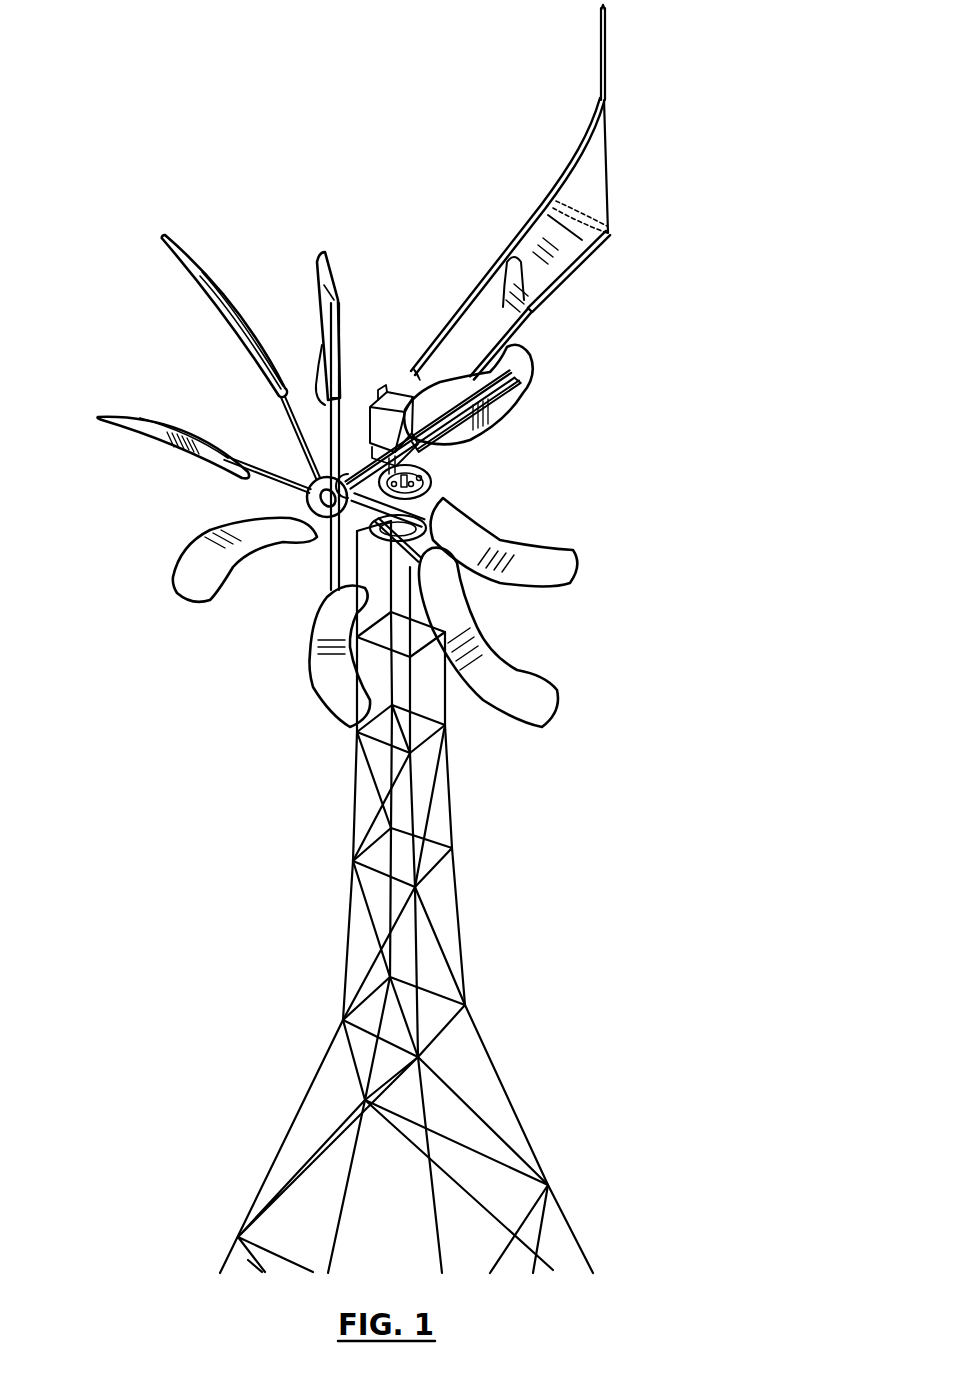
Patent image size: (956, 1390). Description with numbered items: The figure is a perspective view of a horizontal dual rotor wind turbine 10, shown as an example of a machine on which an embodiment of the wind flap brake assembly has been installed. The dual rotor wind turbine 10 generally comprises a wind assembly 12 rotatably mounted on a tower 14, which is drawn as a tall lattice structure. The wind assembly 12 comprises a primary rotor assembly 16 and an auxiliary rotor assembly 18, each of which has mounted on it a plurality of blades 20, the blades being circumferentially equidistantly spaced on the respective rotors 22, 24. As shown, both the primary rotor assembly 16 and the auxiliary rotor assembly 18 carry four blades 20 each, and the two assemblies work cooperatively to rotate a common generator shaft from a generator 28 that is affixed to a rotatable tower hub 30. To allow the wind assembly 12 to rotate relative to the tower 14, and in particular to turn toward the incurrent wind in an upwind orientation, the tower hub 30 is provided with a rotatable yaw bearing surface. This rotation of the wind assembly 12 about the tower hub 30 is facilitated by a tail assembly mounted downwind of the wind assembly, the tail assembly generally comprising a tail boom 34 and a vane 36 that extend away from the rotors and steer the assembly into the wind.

The dual rotor wind turbine 10 is at (112, 310).
The wind assembly 12 is at (545, 485).
The tower 14 is at (518, 998).
The primary rotor assembly 16 is at (350, 448).
The auxiliary rotor assembly 18 is at (313, 468).
The blades 20 is at (563, 555).
The rotor 22 is at (435, 482).
The rotor 24 is at (305, 492).
The generator 28 is at (405, 374).
The tower hub 30 is at (430, 500).
The tail boom 34 is at (510, 258).
The vane 36 is at (592, 193).